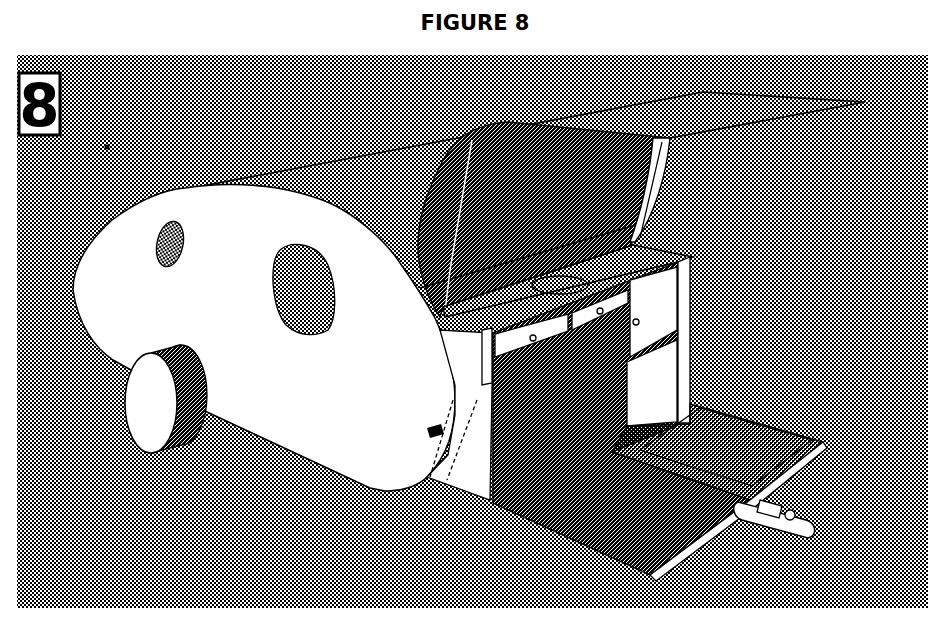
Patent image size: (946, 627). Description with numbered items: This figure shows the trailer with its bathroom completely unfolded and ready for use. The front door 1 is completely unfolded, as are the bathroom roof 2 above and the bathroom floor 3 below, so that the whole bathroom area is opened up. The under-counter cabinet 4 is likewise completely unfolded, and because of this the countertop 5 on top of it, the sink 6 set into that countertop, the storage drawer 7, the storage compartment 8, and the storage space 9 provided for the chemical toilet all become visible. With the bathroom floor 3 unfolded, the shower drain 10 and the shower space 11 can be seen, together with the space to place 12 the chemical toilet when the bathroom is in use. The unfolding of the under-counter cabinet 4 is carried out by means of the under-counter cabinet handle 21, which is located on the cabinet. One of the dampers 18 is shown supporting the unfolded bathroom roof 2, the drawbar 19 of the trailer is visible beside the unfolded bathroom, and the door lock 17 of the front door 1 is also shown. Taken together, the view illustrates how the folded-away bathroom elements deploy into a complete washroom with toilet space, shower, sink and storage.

The front door 1 is at (440, 210).
The bathroom roof 2 is at (777, 100).
The bathroom floor 3 is at (663, 563).
The under-counter cabinet 4 is at (473, 487).
The countertop 5 is at (680, 242).
The sink 6 is at (626, 382).
The storage drawer 7 is at (700, 262).
The storage compartment 8 is at (665, 310).
The storage space 9 is at (687, 347).
The shower drain 10 is at (719, 460).
The shower space 11 is at (733, 410).
The space to place the chemical toilet 12 is at (707, 537).
The door lock 17 is at (425, 437).
The damper 18 is at (443, 160).
The drawbar 19 is at (793, 540).
The under-counter cabinet handle 21 is at (450, 483).